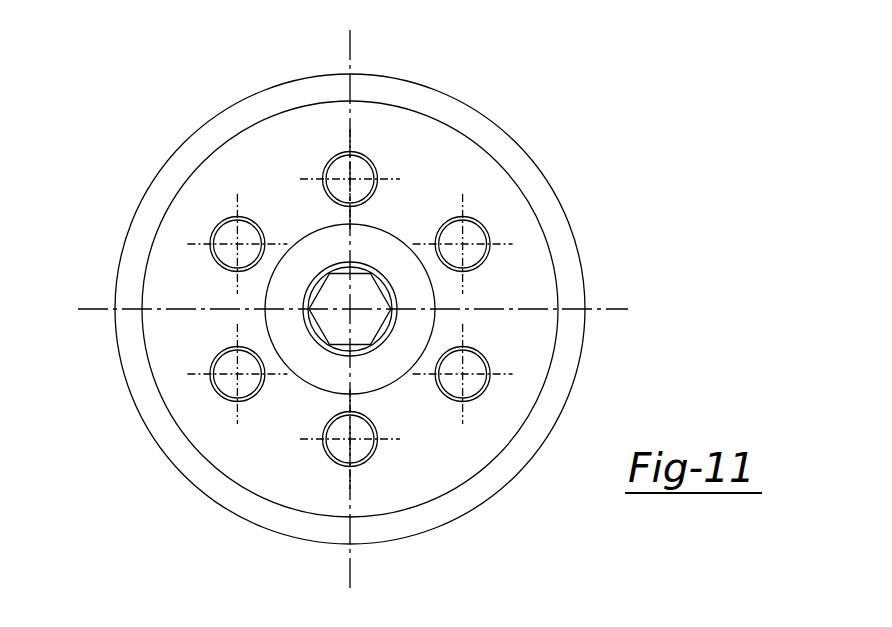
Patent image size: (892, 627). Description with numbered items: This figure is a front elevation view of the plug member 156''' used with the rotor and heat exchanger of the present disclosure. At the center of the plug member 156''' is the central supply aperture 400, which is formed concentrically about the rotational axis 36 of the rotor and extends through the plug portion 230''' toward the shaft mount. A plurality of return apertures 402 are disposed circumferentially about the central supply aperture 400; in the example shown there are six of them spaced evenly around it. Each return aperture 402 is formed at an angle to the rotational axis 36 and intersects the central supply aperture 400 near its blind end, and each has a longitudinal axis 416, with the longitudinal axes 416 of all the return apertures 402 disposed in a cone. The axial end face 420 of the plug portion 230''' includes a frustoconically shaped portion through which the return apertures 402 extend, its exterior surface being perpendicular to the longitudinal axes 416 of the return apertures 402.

The plug member 156''' is at (658, 84).
The axial end face 420 is at (160, 267).
The plug portion 230''' is at (350, 323).
The central supply aperture 400 is at (360, 327).
The rotational axis 36 is at (350, 309).
The return apertures 402 is at (355, 167).
The longitudinal axis 416 is at (463, 244).